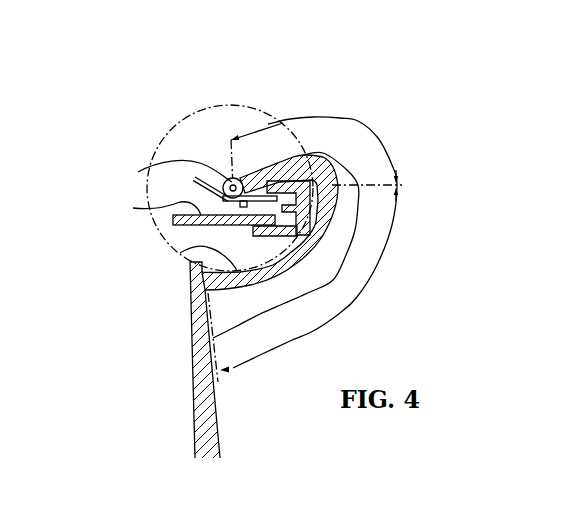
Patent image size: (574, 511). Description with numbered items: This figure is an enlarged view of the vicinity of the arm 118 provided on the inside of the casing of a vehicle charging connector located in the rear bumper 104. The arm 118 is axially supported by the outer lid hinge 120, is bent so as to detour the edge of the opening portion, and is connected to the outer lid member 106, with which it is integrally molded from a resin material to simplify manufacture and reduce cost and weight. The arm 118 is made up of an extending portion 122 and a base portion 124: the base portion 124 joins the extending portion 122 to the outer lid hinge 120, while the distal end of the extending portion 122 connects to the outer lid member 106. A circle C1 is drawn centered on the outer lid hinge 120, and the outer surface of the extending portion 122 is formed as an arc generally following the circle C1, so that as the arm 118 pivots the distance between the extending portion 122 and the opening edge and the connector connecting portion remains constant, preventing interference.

The circle portion C1 is at (223, 107).
The rear bumper 104 is at (133, 208).
The outer lid member 106 is at (193, 405).
The arm 118 is at (180, 253).
The outer lid hinge 120 is at (138, 172).
The extending portion 122 is at (357, 297).
The base portion 124 is at (358, 121).